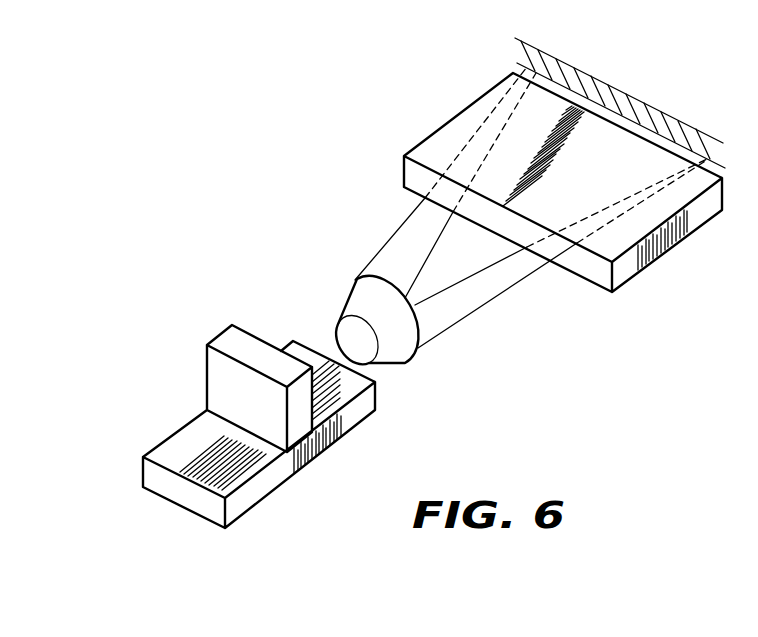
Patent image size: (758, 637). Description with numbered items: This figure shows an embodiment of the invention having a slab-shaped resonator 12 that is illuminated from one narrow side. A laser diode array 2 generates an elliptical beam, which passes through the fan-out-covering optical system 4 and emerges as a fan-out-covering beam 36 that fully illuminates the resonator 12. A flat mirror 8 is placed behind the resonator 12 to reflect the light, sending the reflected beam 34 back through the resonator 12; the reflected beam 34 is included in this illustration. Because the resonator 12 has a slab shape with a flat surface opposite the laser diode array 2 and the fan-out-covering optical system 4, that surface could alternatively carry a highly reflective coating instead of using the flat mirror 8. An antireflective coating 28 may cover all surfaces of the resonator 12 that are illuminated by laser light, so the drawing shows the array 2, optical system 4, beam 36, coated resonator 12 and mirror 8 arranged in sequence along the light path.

The laser diode array 2 is at (188, 438).
The fan-out-covering optical system 4 is at (401, 357).
The flat mirror 8 is at (684, 108).
The resonator 12 is at (390, 179).
The antireflective coating 28 is at (658, 208).
The reflected beam 34 is at (520, 135).
The fan-out-covering beam 36 is at (500, 292).